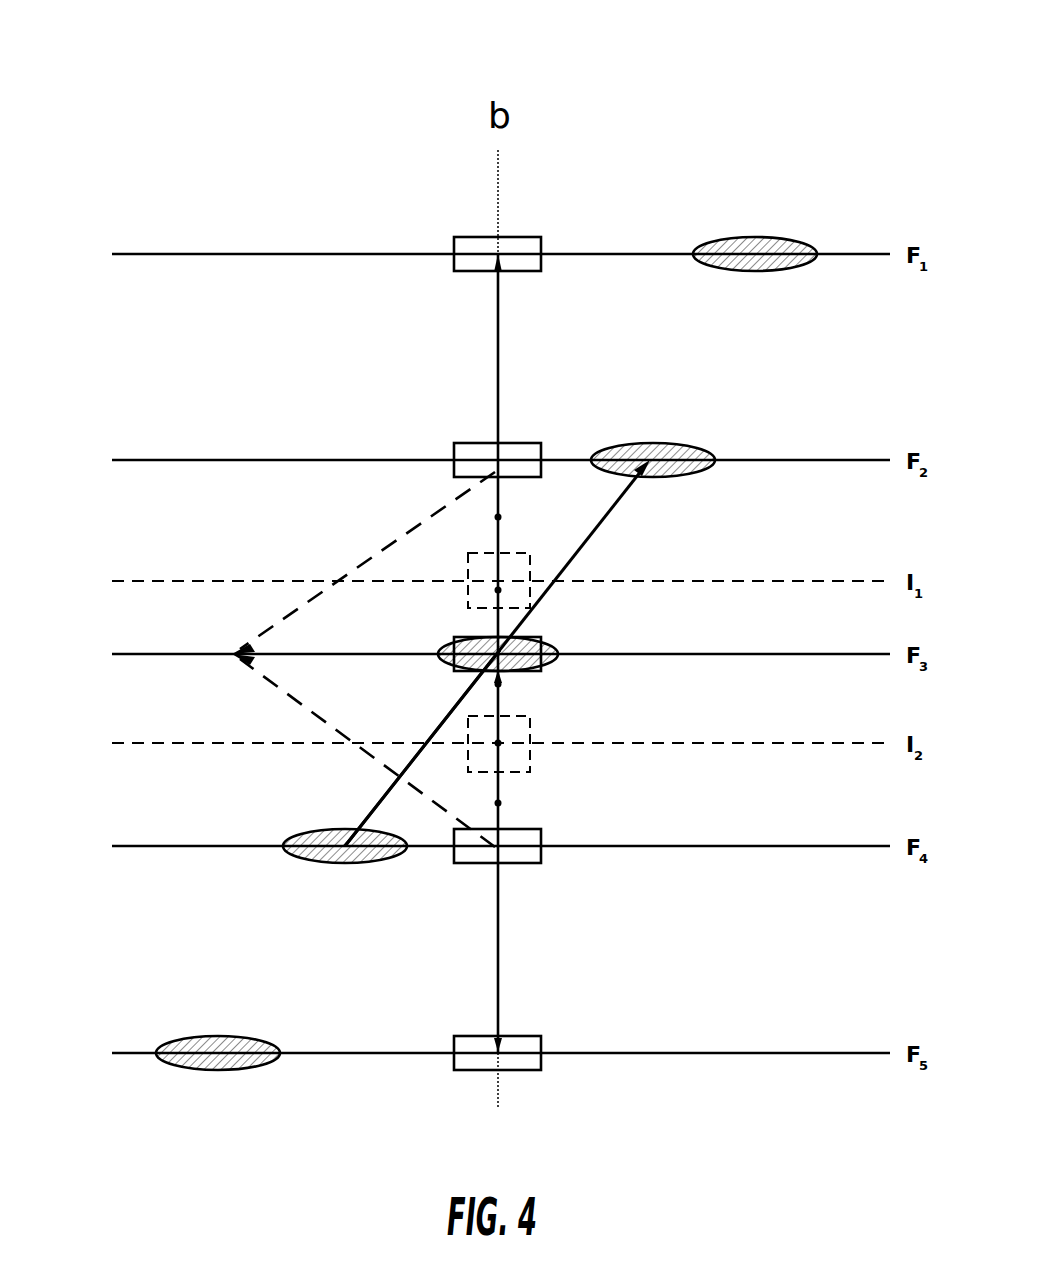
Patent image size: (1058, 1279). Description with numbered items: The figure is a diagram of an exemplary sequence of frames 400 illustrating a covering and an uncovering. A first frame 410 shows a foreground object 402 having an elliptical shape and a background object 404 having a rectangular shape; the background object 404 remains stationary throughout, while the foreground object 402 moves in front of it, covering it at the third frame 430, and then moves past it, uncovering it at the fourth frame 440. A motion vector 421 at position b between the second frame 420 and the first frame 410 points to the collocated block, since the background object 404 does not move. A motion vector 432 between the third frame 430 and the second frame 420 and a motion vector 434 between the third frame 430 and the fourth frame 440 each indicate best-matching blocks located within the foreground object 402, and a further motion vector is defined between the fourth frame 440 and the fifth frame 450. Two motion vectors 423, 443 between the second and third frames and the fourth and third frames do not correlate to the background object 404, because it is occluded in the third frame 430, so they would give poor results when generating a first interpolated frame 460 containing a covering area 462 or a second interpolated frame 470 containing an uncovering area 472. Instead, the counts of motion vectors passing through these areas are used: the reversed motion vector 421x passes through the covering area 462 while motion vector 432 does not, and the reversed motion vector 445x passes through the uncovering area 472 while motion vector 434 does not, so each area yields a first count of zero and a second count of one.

The sequence of frames 400 is at (140, 170).
The foreground object 402 is at (786, 240).
The background object 404 is at (455, 236).
The first frame 410 is at (152, 253).
The second frame 420 is at (152, 459).
The third frame 430 is at (152, 653).
The fourth frame 440 is at (152, 845).
The fifth frame 450 is at (132, 1052).
The motion vector 421 is at (500, 348).
The reversed motion vector 421x is at (504, 532).
The motion vector 423 is at (364, 558).
The motion vector 432 is at (622, 512).
The motion vector 434 is at (377, 806).
The motion vector 443 is at (300, 700).
The reversed motion vector 445x is at (500, 786).
The first interpolated frame 460 is at (682, 580).
The covering area 462 is at (468, 568).
The second interpolated frame 470 is at (620, 742).
The uncovering area 472 is at (530, 722).